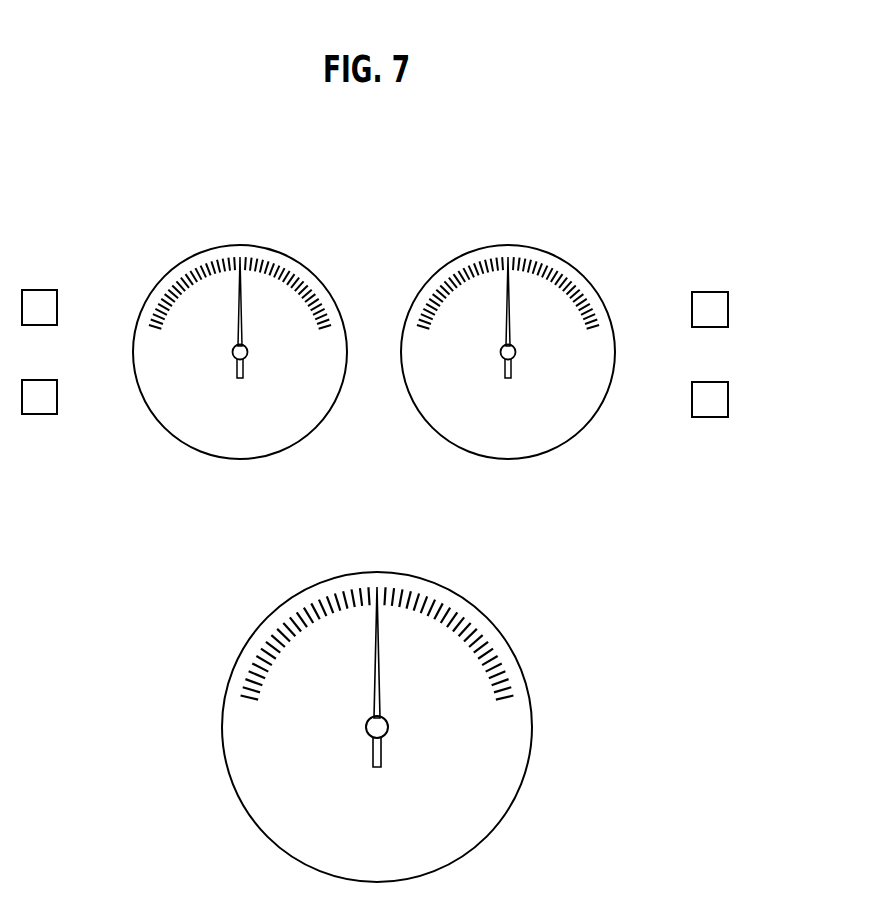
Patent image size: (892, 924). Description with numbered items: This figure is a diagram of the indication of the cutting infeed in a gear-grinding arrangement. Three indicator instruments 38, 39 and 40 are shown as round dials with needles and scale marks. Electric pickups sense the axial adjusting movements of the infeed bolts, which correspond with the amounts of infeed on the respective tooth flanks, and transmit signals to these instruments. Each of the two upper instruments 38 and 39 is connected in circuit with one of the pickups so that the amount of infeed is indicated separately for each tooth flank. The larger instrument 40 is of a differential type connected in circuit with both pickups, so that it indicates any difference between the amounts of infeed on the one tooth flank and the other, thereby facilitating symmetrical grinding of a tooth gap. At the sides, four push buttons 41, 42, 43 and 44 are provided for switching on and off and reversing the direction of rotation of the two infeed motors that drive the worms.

The indicator instrument 38 is at (293, 263).
The indicator instrument 39 is at (453, 263).
The differential indicator instrument 40 is at (502, 735).
The push button 41 is at (38, 302).
The push button 42 is at (42, 403).
The push button 43 is at (705, 298).
The push button 44 is at (705, 410).